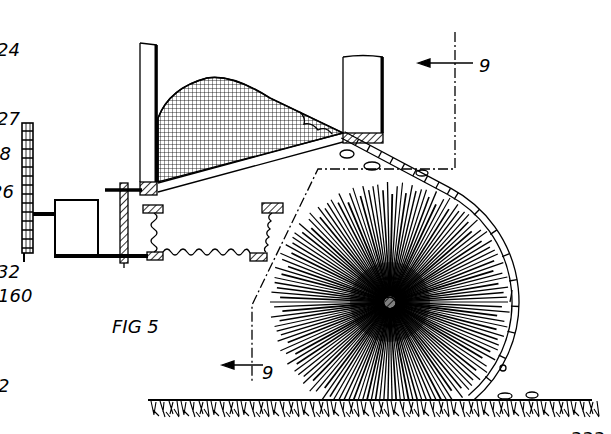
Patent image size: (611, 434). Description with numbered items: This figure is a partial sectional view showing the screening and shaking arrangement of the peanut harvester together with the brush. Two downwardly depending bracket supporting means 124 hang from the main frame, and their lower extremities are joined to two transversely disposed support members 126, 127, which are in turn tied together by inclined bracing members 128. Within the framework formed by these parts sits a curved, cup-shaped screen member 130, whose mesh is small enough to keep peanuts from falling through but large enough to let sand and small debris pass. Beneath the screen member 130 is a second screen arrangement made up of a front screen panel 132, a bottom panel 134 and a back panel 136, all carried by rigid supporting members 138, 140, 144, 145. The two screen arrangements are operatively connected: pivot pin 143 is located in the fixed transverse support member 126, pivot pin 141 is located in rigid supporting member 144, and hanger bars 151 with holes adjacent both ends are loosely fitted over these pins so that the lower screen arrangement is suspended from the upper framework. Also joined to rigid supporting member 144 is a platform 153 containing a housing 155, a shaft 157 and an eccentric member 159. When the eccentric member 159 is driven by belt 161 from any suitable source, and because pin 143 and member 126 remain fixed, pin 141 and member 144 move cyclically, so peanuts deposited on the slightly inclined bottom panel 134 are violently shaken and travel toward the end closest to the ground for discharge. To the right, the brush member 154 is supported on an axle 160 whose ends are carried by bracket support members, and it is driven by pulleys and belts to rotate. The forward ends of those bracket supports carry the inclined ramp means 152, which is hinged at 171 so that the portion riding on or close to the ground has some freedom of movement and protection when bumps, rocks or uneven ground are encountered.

The bracket supporting means 124 is at (140, 71).
The transverse support member 126 is at (140, 180).
The transverse support member 127 is at (384, 139).
The inclined bracing member 128 is at (317, 127).
The screen member 130 is at (277, 95).
The front screen panel 132 is at (268, 228).
The bottom panel 134 is at (220, 253).
The back panel 136 is at (162, 228).
The rigid supporting member 138 is at (281, 203).
The rigid supporting member 140 is at (262, 265).
The pivot pin 141 is at (140, 262).
The pivot pin 143 is at (108, 187).
The rigid supporting member 144 is at (164, 258).
The rigid supporting member 145 is at (175, 201).
The hanger bar 151 is at (120, 200).
The inclined ramp means 152 is at (508, 250).
The platform 153 is at (80, 260).
The brush member 154 is at (292, 378).
The housing 155 is at (108, 261).
The shaft 157 is at (51, 200).
The eccentric member 159 is at (37, 255).
The axle 160 is at (512, 292).
The belt 161 is at (36, 158).
The hinge 171 is at (507, 367).